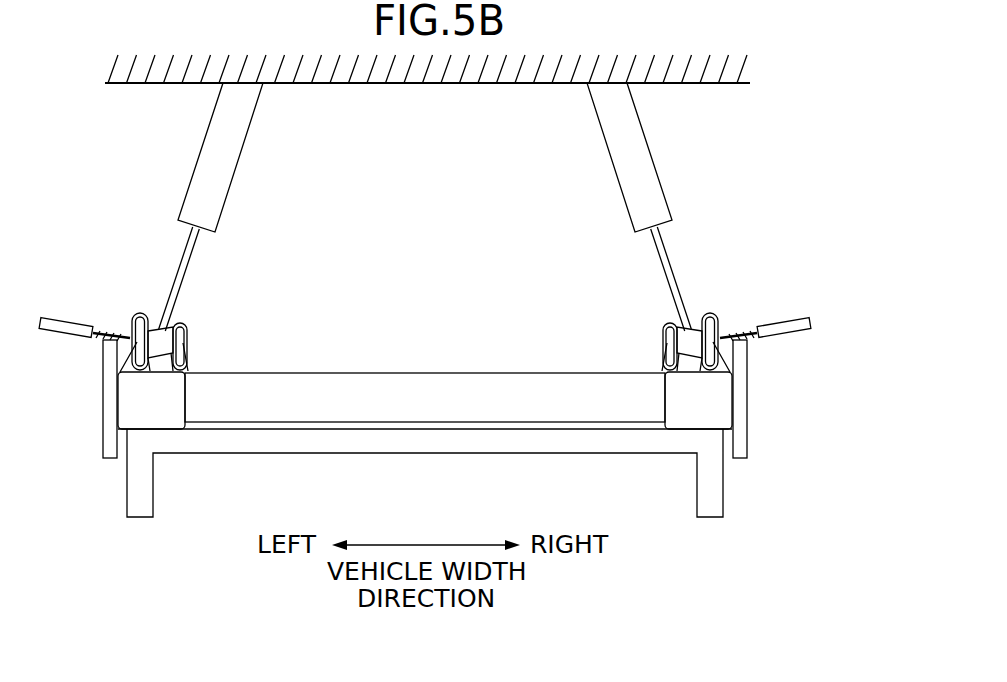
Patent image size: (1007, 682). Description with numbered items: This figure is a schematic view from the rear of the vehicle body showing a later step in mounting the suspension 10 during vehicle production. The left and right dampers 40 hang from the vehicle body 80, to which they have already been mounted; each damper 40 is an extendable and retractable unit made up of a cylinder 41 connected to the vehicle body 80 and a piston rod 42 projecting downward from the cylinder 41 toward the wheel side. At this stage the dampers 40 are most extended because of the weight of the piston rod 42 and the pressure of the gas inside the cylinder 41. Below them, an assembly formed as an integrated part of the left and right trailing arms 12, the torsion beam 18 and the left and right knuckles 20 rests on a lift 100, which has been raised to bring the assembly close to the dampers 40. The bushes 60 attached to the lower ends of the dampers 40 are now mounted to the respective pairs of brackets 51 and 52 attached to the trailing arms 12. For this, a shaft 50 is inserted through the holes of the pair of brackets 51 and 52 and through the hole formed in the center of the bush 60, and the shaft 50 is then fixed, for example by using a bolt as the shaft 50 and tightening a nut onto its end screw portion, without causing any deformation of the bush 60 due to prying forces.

The suspension 10 is at (746, 175).
The trailing arm 12 is at (188, 426).
The torsion beam 18 is at (398, 372).
The knuckle 20 is at (103, 450).
The damper 40 is at (425, 207).
The cylinder 41 is at (223, 185).
The piston rod 42 is at (198, 247).
The shaft 50 is at (66, 333).
The bracket 51 is at (190, 340).
The bracket 52 is at (127, 338).
The bush 60 is at (180, 325).
The vehicle body 80 is at (403, 84).
The lift 100 is at (395, 454).